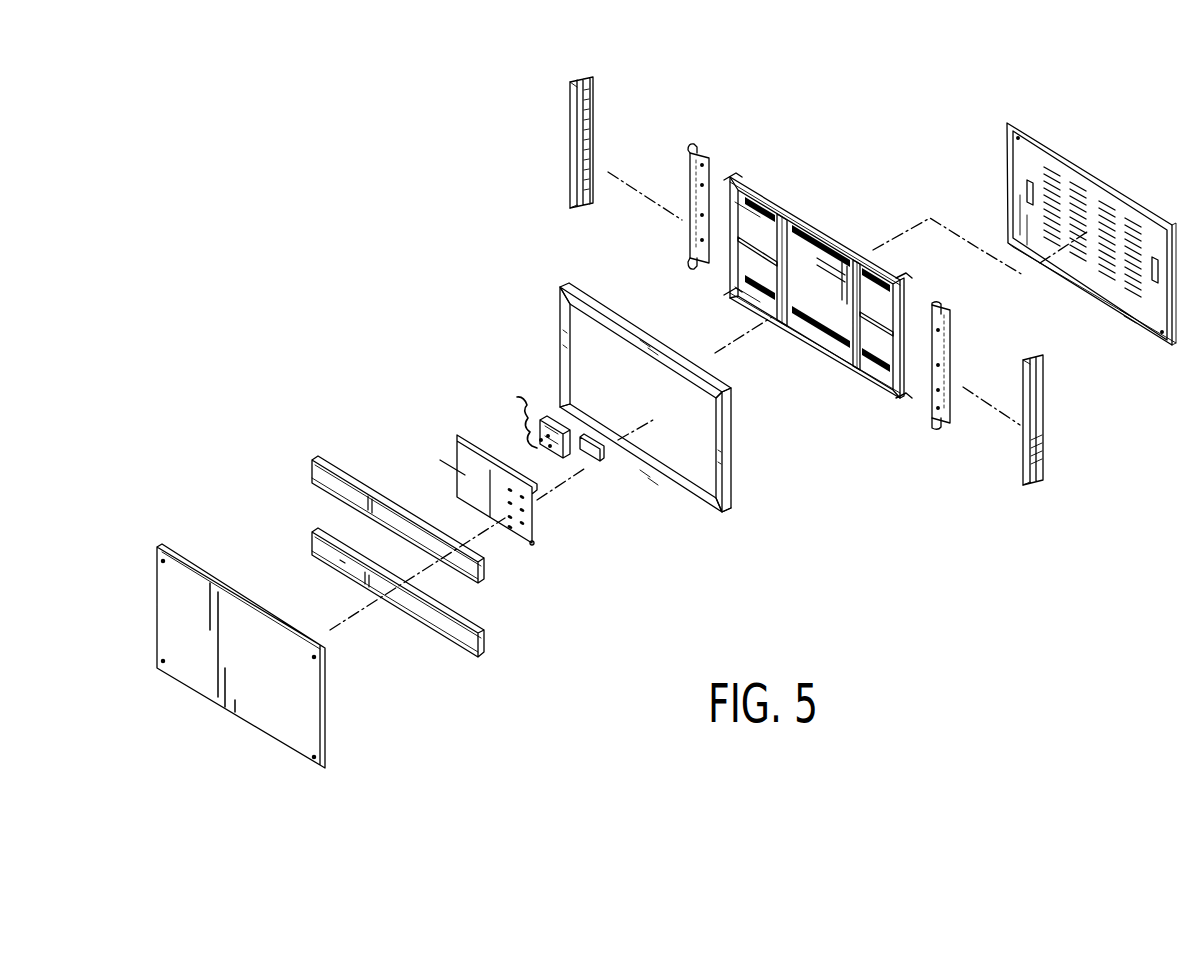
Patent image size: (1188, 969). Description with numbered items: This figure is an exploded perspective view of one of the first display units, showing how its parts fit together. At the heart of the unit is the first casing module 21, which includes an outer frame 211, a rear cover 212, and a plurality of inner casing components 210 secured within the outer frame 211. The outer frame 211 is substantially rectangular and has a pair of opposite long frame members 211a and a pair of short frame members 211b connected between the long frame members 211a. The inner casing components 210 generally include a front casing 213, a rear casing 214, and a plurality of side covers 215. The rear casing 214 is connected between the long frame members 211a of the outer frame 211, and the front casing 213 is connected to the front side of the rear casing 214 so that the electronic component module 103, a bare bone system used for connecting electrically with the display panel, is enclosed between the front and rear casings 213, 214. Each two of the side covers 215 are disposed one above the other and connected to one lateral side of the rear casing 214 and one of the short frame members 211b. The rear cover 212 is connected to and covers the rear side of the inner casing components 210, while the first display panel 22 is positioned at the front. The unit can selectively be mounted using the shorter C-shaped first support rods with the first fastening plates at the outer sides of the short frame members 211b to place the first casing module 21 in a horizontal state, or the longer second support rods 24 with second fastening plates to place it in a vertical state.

The first casing module 21 is at (839, 258).
The inner casing components 210 is at (838, 258).
The outer frame 211 is at (622, 369).
The long frame members 211a is at (615, 317).
The short frame members 211b is at (557, 348).
The rear cover 212 is at (1090, 170).
The front casing 213 is at (462, 466).
The rear casing 214 is at (843, 258).
The side covers 215 is at (758, 265).
The first display panel 22 is at (172, 592).
The second support rods 24 is at (307, 540).
The electronic component module 103 is at (520, 423).